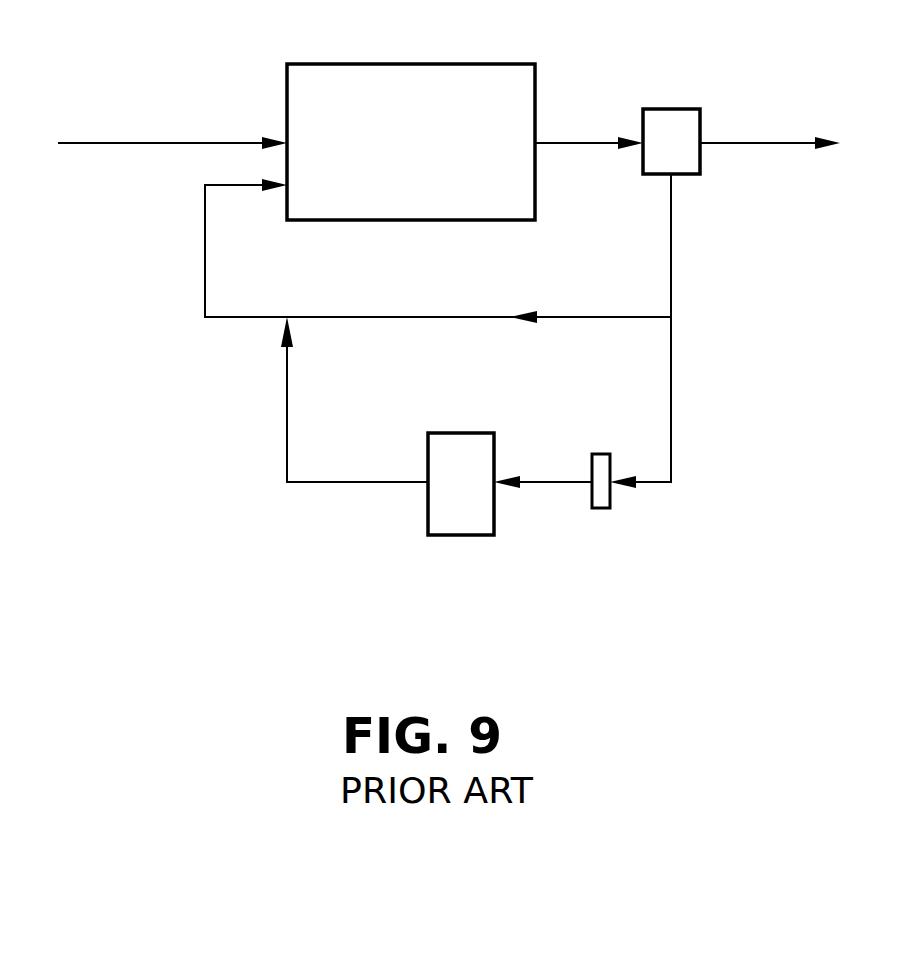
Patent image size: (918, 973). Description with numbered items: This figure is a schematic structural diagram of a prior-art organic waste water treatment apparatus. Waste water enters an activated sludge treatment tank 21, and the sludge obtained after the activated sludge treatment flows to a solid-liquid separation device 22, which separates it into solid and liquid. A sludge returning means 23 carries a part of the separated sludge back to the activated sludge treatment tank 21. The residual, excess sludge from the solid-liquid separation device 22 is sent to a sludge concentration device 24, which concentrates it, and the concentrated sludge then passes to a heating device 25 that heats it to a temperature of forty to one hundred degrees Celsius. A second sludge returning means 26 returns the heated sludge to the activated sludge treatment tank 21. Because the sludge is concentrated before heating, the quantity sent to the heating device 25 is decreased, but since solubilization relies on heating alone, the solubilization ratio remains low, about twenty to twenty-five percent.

The activated sludge treatment tank 21 is at (425, 63).
The solid-liquid separation device 22 is at (682, 107).
The sludge returning means 23 is at (400, 316).
The sludge concentration device 24 is at (600, 510).
The heating device 25 is at (462, 537).
The sludge returning means 26 is at (287, 422).